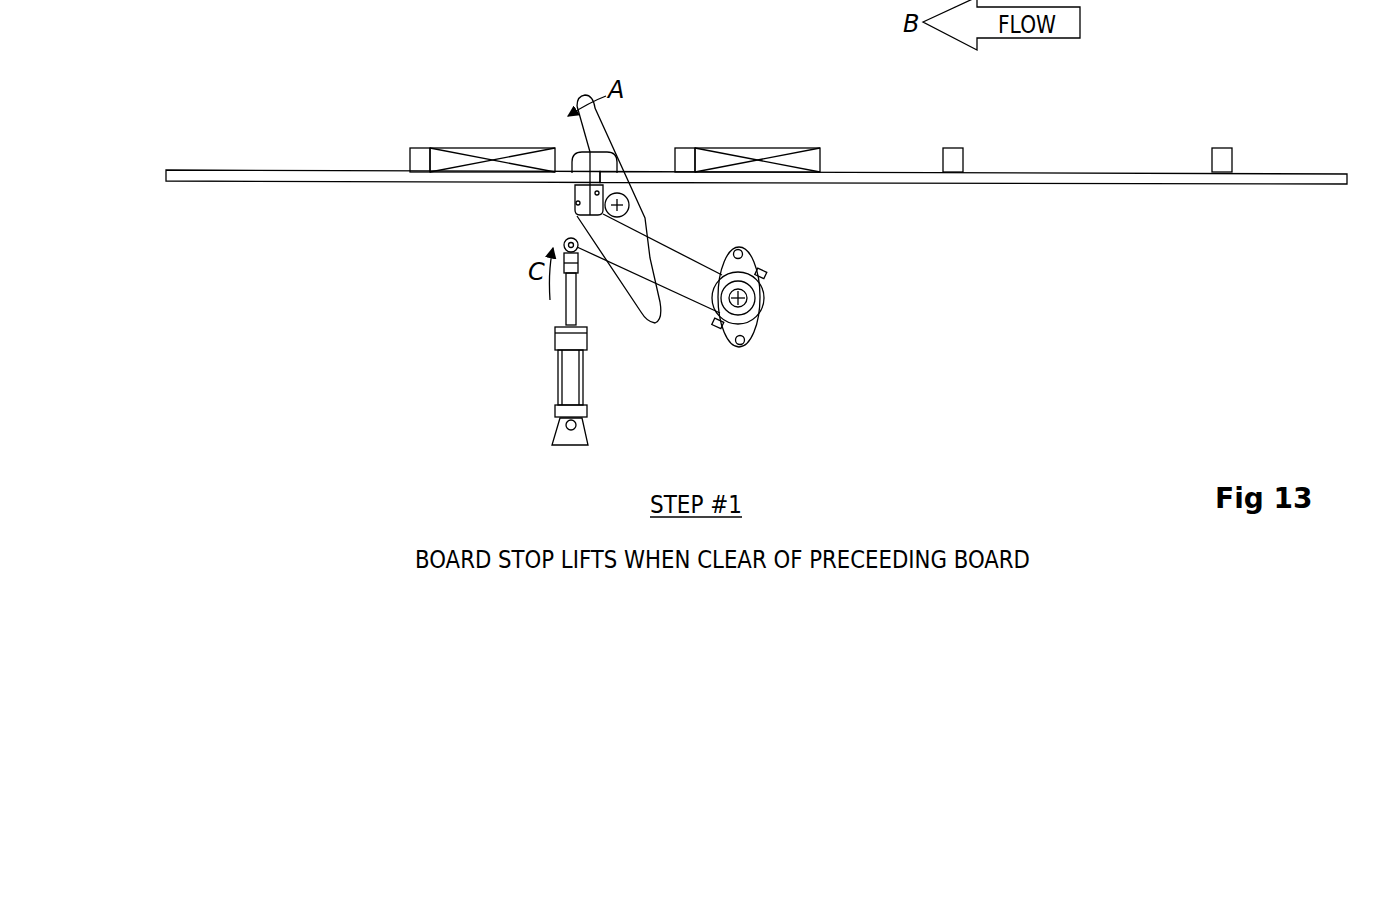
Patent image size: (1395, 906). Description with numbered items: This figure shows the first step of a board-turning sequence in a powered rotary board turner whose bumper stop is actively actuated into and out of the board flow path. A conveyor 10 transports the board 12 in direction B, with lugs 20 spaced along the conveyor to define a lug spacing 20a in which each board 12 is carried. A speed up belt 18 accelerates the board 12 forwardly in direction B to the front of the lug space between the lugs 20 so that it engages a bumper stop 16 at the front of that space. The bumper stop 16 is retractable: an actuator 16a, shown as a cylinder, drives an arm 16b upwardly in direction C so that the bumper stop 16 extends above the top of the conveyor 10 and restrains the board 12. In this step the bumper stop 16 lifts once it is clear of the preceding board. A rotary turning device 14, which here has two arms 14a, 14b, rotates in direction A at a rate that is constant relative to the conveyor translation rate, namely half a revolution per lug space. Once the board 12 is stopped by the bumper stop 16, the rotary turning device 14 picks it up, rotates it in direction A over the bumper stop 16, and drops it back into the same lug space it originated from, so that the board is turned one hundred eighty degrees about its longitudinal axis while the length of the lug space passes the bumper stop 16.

The conveyor 10 is at (1046, 123).
The board 12 is at (458, 147).
The rotary turning device 14 is at (652, 146).
The arm 14a is at (600, 124).
The arm 14b is at (643, 310).
The bumper stop 16 is at (575, 158).
The actuator 16a is at (554, 368).
The arm 16b is at (676, 243).
The speed up belt 18 is at (325, 168).
The lugs 20 is at (955, 146).
The lug spacing 20a is at (1088, 158).